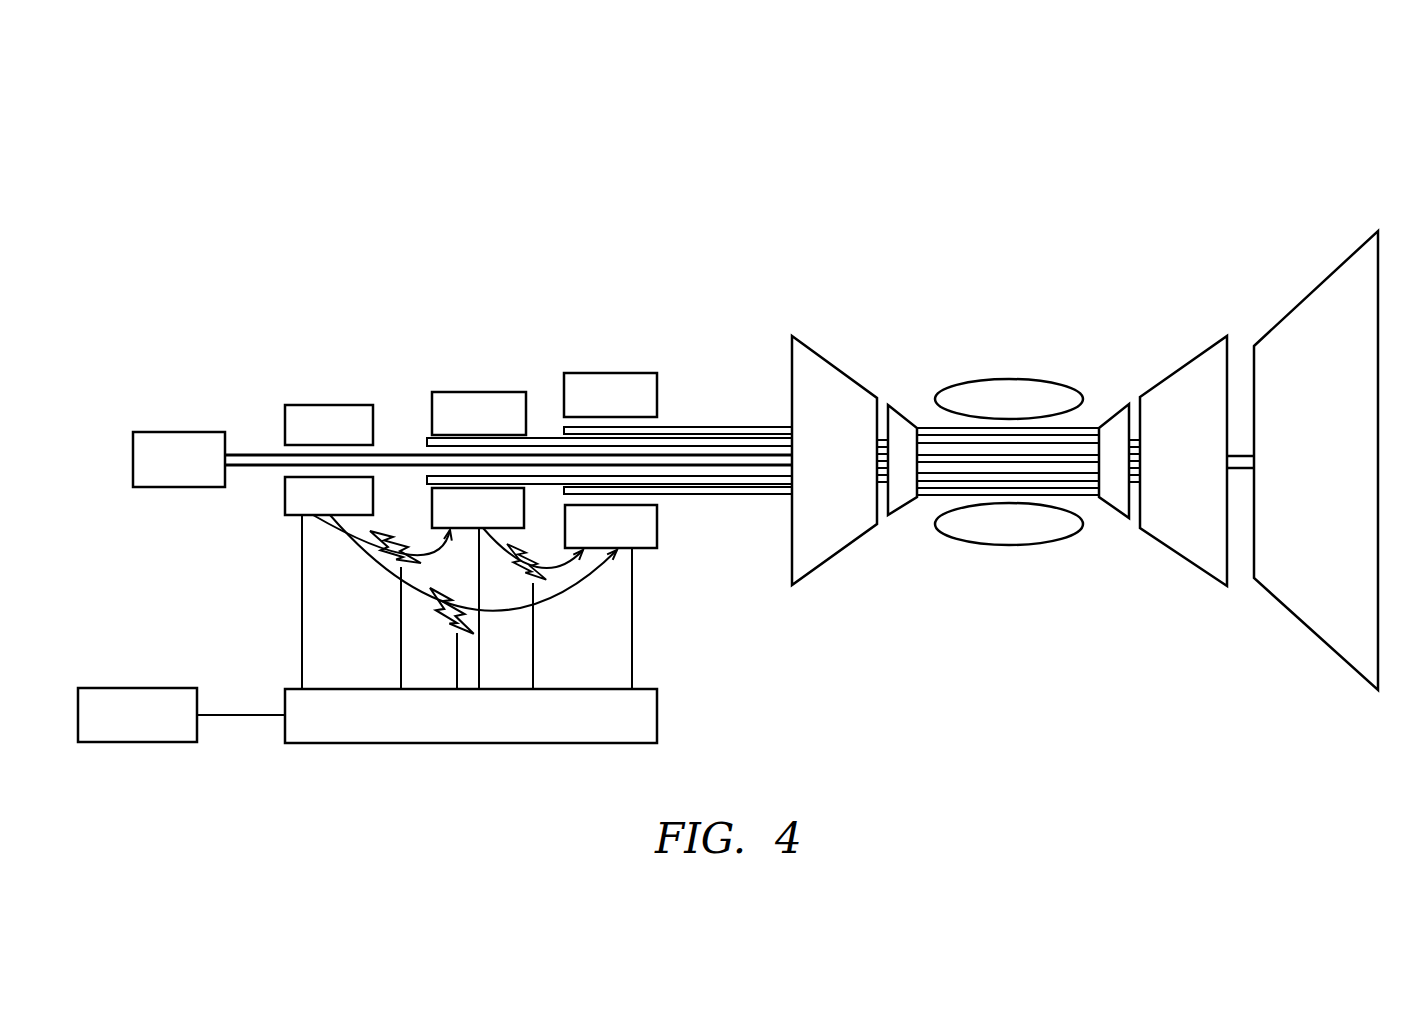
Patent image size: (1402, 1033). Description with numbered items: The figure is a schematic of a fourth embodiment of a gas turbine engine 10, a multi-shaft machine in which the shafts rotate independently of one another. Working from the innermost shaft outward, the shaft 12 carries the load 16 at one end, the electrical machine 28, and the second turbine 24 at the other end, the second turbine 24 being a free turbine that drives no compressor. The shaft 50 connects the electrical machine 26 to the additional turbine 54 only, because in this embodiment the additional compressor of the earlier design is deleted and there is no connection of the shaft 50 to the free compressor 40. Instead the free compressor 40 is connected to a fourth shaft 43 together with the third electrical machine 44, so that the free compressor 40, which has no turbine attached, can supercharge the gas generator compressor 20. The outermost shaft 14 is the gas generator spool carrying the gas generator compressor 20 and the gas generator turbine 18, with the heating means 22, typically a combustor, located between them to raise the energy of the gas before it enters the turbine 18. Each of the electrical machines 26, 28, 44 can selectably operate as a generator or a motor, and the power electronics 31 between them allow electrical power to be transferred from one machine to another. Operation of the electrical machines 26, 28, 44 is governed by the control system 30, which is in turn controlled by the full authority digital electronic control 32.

The gas turbine engine 10 is at (845, 137).
The shaft 12 is at (247, 452).
The shaft 14 is at (1092, 428).
The load 16 is at (182, 432).
The gas generator turbine 18 is at (1121, 403).
The gas generator compressor 20 is at (903, 405).
The means for heating the gas 22 is at (1010, 380).
The second turbine 24 is at (1297, 305).
The high speed electrical machine 26 is at (478, 392).
The electrical machine 28 is at (327, 405).
The control system 30 is at (657, 715).
The power electronics 31 is at (392, 563).
The full authority digital electronic control (FADEC) 32 is at (137, 688).
The free compressor 40 is at (842, 365).
The fourth shaft 43 is at (756, 428).
The third electrical machine 44 is at (600, 373).
The shaft 50 is at (543, 437).
The additional turbine 54 is at (1197, 350).